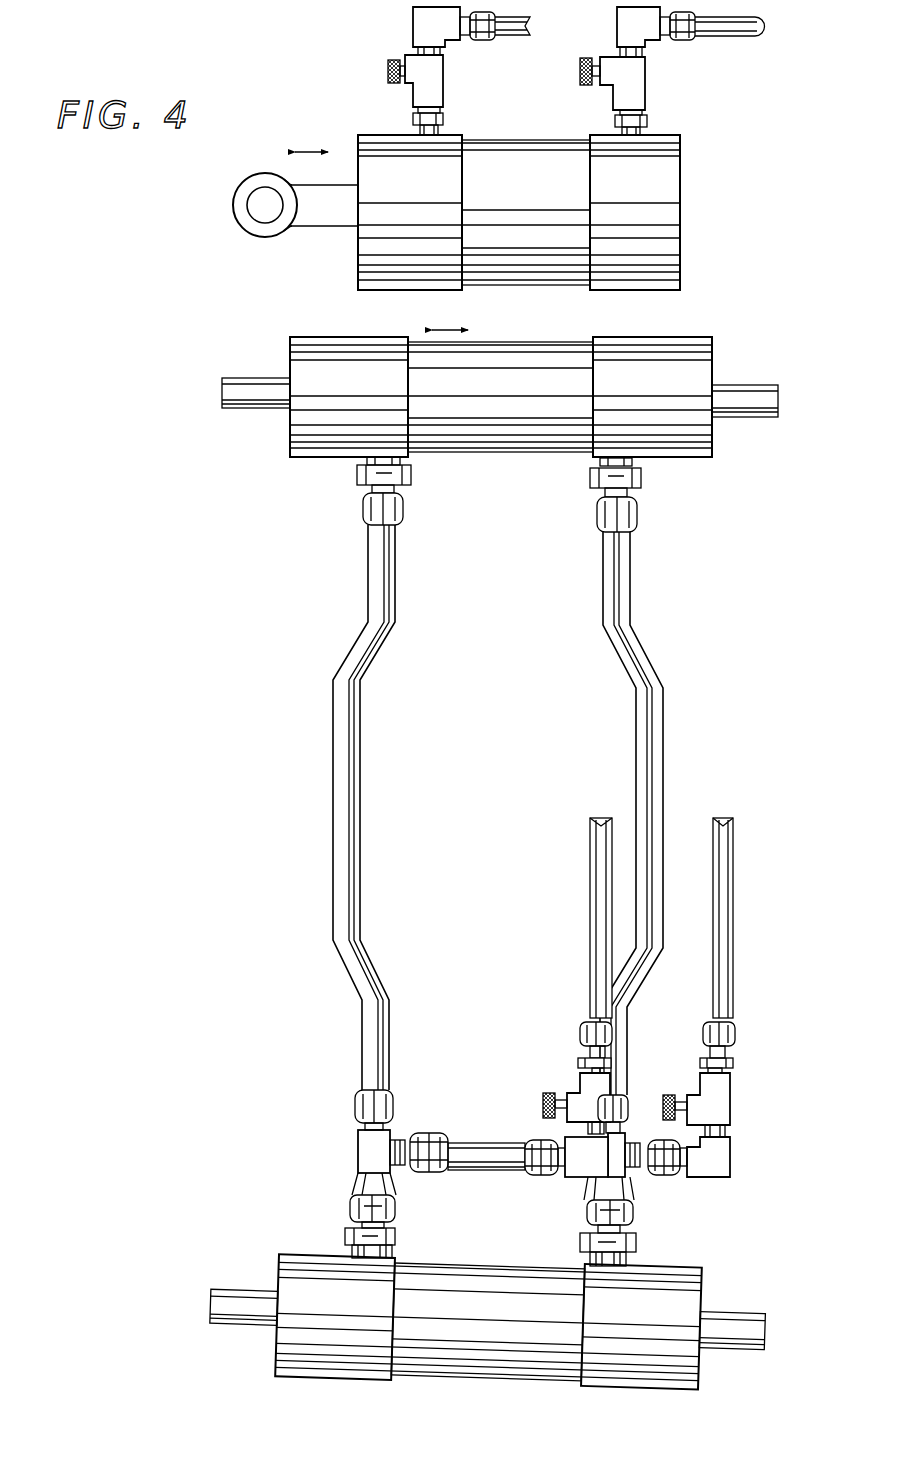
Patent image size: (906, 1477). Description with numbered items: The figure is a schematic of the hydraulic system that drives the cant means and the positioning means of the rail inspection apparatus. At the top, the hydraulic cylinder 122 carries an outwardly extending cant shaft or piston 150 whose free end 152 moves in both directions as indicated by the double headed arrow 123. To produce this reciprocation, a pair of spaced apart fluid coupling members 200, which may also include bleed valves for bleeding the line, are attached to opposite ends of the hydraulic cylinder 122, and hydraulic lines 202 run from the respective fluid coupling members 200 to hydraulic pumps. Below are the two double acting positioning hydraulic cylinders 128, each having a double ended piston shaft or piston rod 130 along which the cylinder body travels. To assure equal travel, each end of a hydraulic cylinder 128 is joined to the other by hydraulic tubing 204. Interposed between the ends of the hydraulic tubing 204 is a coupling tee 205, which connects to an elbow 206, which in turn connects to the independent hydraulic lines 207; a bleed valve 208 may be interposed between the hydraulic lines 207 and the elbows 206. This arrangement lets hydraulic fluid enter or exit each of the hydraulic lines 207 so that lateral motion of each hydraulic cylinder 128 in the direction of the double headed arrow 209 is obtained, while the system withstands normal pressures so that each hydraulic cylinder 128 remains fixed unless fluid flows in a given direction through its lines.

The hydraulic cylinder 122 is at (510, 280).
The double headed arrow 123 is at (310, 152).
The double acting hydraulic cylinders 128 is at (685, 322).
The piston rods 130 is at (268, 366).
The cant shaft or piston 150 is at (328, 212).
The free end 152 is at (234, 203).
The fluid coupling members 200 is at (443, 73).
The hydraulic lines 202 is at (528, 32).
The hydraulic tubing 204 is at (350, 678).
The coupling tee 205 is at (360, 1150).
The elbow 206 is at (578, 1167).
The hydraulic lines 207 is at (592, 930).
The bleed valve 208 is at (585, 1090).
The double headed arrow 209 is at (450, 330).